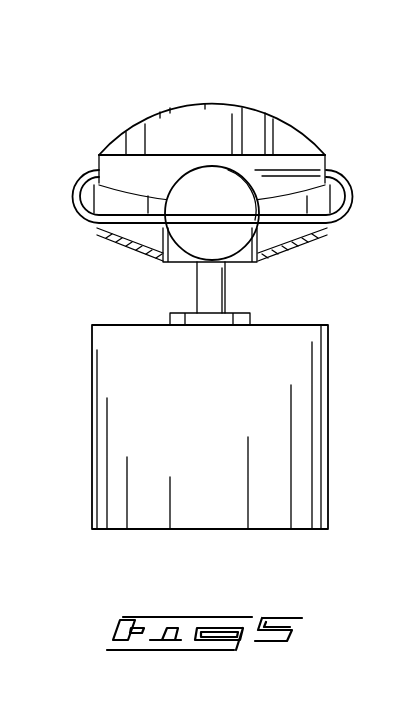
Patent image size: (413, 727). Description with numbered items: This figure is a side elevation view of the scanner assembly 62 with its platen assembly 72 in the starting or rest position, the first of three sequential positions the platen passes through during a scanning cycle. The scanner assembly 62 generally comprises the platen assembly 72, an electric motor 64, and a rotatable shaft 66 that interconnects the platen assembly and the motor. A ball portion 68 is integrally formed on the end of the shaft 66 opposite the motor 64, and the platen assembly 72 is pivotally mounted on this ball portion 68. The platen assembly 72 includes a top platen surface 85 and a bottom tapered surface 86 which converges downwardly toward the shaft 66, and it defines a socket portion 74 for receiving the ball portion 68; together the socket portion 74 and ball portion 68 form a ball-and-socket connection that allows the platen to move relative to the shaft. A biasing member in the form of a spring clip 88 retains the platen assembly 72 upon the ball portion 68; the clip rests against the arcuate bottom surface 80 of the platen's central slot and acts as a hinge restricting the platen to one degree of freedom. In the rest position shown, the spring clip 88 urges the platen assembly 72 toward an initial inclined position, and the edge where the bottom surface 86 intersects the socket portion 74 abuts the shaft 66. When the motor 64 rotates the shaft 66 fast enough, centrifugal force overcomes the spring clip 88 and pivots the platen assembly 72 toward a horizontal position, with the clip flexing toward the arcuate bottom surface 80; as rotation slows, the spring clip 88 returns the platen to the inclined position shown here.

The scanner assembly 62 is at (54, 124).
The electric motor 64 is at (192, 403).
The rotatable shaft 66 is at (211, 297).
The ball portion 68 is at (212, 264).
The platen assembly 72 is at (303, 117).
The socket portion 74 is at (250, 260).
The arcuate bottom surface 80 is at (148, 236).
The top platen surface 85 is at (190, 132).
The bottom tapered surface 86 is at (115, 233).
The spring clip 88 is at (353, 197).